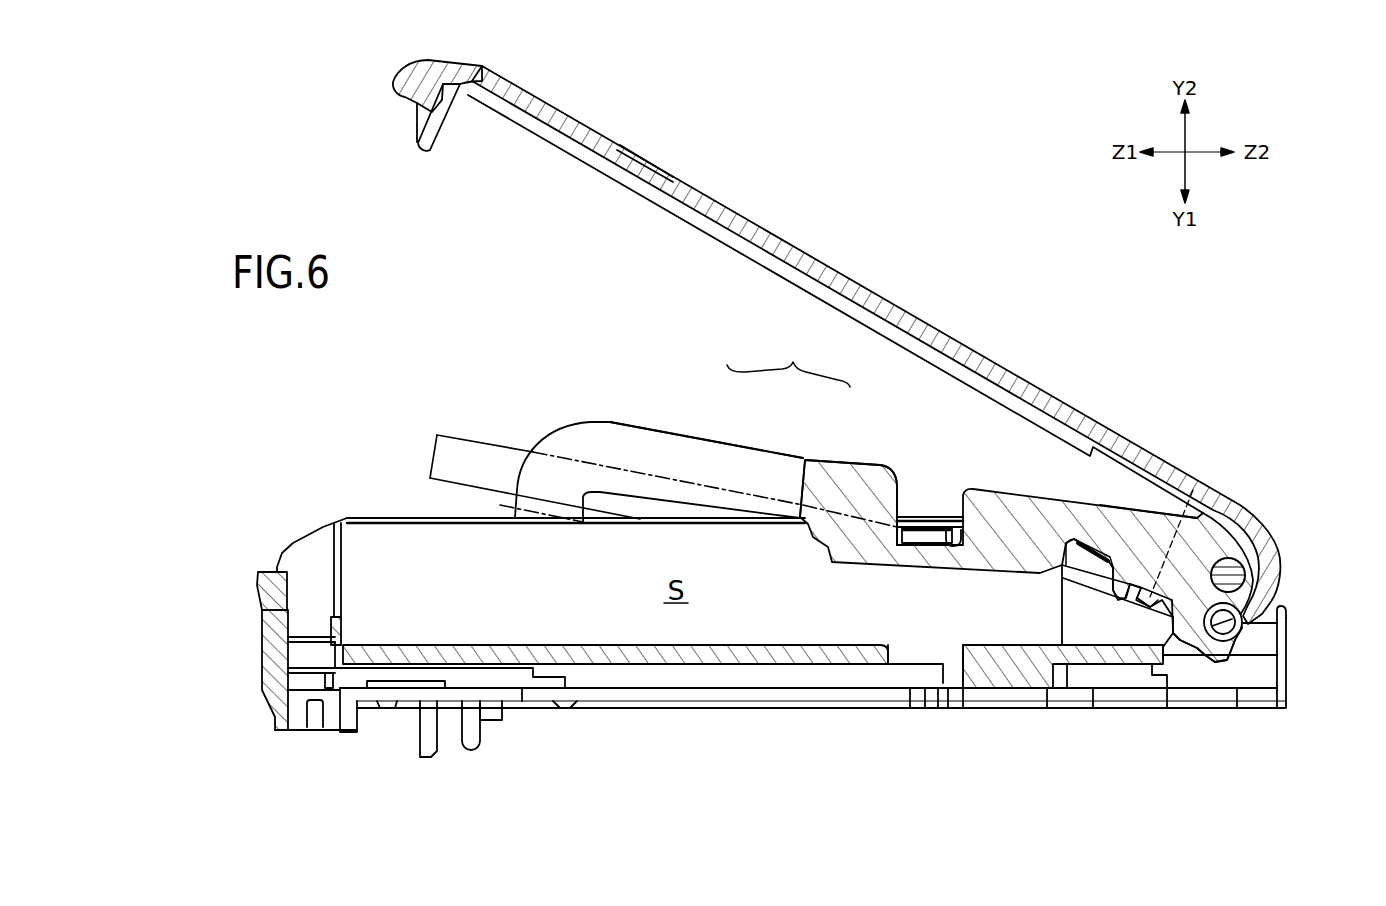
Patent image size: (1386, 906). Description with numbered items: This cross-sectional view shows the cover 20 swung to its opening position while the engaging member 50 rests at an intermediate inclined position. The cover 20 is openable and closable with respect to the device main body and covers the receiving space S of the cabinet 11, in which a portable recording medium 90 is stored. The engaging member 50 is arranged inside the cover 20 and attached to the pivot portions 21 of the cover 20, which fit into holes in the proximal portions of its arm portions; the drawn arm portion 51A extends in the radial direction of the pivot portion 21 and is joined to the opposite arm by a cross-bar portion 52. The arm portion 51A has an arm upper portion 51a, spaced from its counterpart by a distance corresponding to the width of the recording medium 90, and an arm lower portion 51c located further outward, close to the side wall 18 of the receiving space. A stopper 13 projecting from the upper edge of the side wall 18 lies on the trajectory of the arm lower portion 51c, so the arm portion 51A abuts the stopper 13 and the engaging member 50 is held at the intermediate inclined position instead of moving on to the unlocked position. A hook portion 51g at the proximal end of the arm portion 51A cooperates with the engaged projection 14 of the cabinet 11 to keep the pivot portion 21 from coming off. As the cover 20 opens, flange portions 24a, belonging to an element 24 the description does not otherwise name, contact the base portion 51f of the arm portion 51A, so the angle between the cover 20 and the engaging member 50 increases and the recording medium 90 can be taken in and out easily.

The cabinet 11 is at (240, 653).
The stopper 13 is at (914, 542).
The engaged projection 14 is at (1236, 627).
The side wall 18 is at (375, 538).
The cover 20 is at (820, 272).
The pivot portion 21 is at (1240, 576).
The lock lever 24 is at (1097, 487).
The flange portion 24a is at (1087, 562).
The engaging member 50 is at (1021, 472).
The arm portion 51A is at (730, 395).
The arm upper portion 51a is at (730, 438).
The arm lower portion 51c is at (853, 460).
The base portion 51f is at (1147, 537).
The hook portion 51g is at (1207, 656).
The cross-bar portion 52 is at (535, 524).
The portable recording medium 90 is at (470, 440).